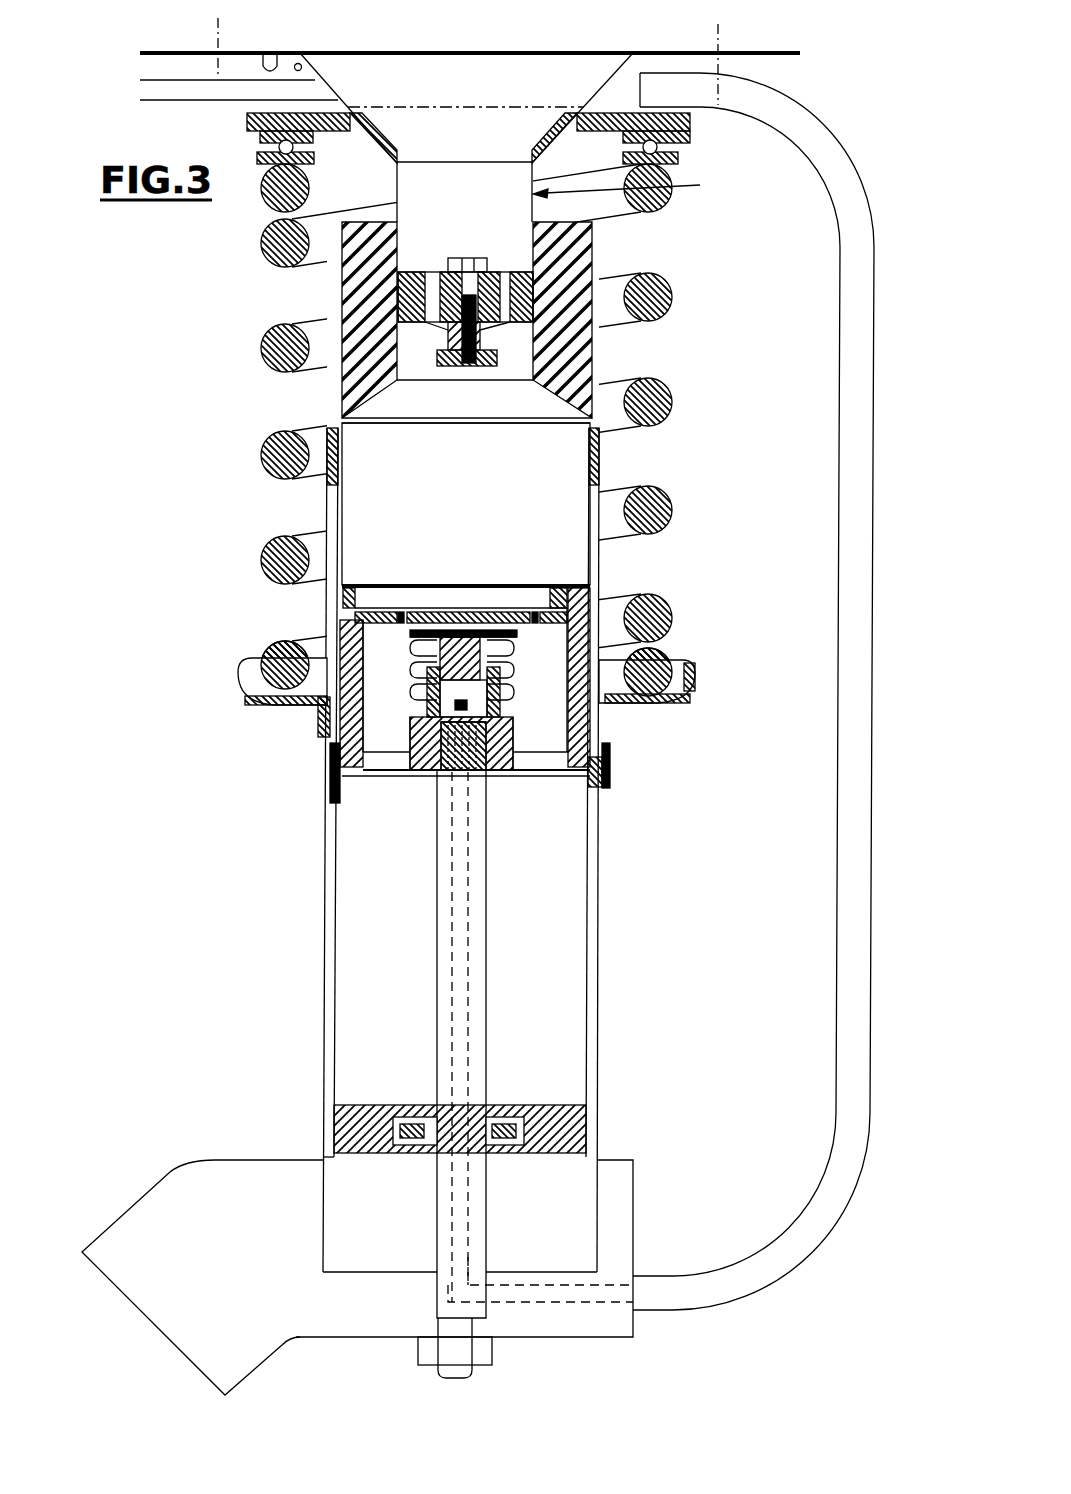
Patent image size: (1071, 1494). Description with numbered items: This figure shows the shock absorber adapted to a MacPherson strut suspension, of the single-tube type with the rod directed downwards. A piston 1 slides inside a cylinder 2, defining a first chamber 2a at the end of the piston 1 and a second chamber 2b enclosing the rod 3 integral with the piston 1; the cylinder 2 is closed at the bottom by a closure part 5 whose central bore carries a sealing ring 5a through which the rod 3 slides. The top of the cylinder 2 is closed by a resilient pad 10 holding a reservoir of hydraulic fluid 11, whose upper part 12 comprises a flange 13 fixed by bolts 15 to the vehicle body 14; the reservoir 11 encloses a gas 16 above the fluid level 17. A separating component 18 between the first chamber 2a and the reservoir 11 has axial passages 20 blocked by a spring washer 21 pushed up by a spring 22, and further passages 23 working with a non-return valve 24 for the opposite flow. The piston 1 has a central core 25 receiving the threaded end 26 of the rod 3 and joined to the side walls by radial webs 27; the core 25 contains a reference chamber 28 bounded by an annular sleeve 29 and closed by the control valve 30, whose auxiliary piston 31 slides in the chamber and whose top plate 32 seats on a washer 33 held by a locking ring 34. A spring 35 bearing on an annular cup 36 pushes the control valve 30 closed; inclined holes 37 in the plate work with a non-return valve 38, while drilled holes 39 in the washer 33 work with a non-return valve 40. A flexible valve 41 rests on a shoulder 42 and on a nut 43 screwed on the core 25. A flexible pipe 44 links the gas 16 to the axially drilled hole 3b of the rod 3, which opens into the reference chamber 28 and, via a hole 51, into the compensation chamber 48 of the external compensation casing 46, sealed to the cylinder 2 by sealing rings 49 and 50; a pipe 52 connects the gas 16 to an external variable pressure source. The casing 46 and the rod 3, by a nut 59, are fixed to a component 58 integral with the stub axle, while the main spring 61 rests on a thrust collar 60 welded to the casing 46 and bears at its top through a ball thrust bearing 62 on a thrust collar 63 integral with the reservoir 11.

The piston 1 is at (601, 703).
The cylinder 2 is at (326, 937).
The first chamber 2a is at (380, 444).
The second chamber 2b is at (337, 966).
The rod 3 is at (440, 975).
The axially drilled hole 3b is at (460, 1011).
The closure part 5 is at (562, 1130).
The sealing ring 5a is at (396, 1132).
The resilient pad 10 is at (377, 258).
The reservoir of hydraulic fluid 11 is at (631, 185).
The upper part of the reservoir 12 is at (299, 62).
The flange 13 is at (264, 56).
The body of the automobile vehicle 14 is at (349, 52).
The bolts 15 is at (718, 26).
The gas 16 is at (590, 70).
The level of the fluid 17 is at (534, 105).
The separating component 18 is at (346, 290).
The axial passages 20 is at (346, 320).
The spring washer 21 is at (500, 330).
The spring 22 is at (492, 356).
The axial passages 23 is at (520, 281).
The non-return valve 24 is at (487, 263).
The central core 25 is at (472, 772).
The threaded end 26 is at (472, 786).
The radial webs 27 is at (384, 728).
The reference chamber 28 is at (505, 705).
The annular sleeve 29 is at (500, 716).
The control valve 30 is at (470, 637).
The auxiliary piston 31 is at (483, 645).
The top plate 32 is at (356, 616).
The washer 33 is at (345, 598).
The locking ring 34 is at (366, 590).
The spring 35 is at (410, 687).
The annular cup 36 is at (433, 667).
The holes 37 is at (585, 632).
The non-return valve 38 is at (688, 664).
The drilled holes 39 is at (397, 600).
The non-return valve 40 is at (412, 637).
The valve 41 is at (390, 792).
The shoulder 42 is at (338, 790).
The nut 43 is at (383, 723).
The flexible pipe 44 is at (860, 264).
The external compensation casing 46 is at (599, 1001).
The compensation chamber 48 is at (546, 1197).
The sealing ring 49 is at (601, 461).
The sealing ring 50 is at (490, 732).
The hole 51 is at (478, 1253).
The pipe 52 is at (168, 93).
The component 58 is at (233, 1196).
The nut 59 is at (483, 1356).
The thrust collar 60 is at (692, 685).
The main spring 61 is at (656, 520).
The ball thrust bearing 62 is at (690, 157).
The thrust collar 63 is at (690, 122).